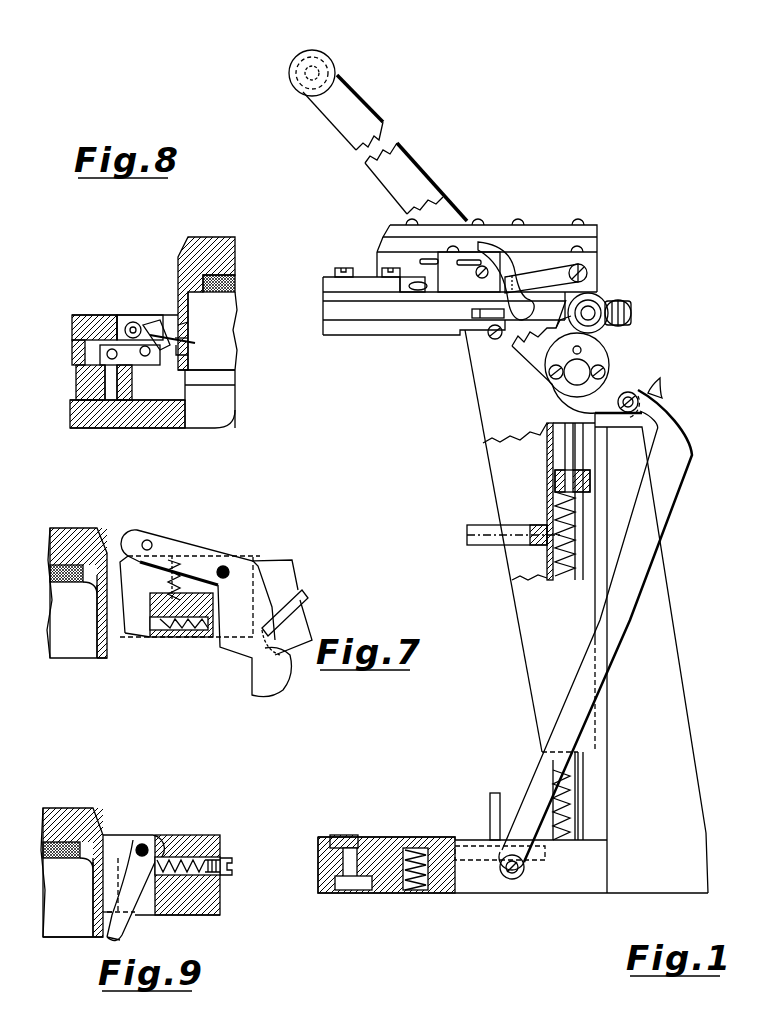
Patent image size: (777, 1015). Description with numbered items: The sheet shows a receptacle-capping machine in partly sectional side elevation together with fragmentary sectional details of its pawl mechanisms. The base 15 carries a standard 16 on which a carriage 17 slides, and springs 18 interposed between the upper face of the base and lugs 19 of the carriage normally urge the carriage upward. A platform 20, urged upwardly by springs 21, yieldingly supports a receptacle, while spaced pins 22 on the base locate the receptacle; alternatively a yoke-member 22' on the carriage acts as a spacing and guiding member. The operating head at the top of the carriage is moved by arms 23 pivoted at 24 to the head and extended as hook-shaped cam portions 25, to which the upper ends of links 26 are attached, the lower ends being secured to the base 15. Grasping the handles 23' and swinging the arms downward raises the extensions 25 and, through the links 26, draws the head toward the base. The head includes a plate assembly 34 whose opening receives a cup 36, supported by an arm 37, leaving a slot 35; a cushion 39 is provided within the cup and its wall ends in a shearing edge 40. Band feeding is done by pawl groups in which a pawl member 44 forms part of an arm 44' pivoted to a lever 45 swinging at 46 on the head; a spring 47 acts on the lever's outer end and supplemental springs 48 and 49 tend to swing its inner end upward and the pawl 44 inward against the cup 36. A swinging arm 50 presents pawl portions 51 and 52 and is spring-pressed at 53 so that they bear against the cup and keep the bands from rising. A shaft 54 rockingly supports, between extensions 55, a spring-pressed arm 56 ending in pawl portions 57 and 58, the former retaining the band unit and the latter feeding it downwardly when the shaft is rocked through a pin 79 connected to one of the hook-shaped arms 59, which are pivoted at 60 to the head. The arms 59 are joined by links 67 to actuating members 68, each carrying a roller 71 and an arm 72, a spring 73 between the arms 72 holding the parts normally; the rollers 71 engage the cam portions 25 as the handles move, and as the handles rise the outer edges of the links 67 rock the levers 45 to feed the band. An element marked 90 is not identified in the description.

In FIG. 1, the base 15 is at (513, 865).
In FIG. 1, the standard 16 is at (651, 660).
In FIG. 1, the carriage 17 is at (515, 541).
In FIG. 1, the springs 18 is at (546, 512).
In FIG. 1, the lugs 19 is at (591, 480).
In FIG. 1, the platform 20 is at (427, 837).
In FIG. 1, the springs 21 is at (420, 893).
In FIG. 1, the pins 22 is at (488, 801).
In FIG. 1, the yoke-member 22' is at (506, 524).
In FIG. 1, the arm 23 is at (449, 244).
In FIG. 1, the handle 23' is at (302, 66).
In FIG. 1, the pivot 24 is at (592, 370).
In FIG. 1, the hook-shaped cam portion 25 is at (661, 390).
In FIG. 1, the link 26 is at (630, 612).
In FIG. 1, the plate assembly 34 is at (323, 297).
In FIG. 8, the plate assembly 34 is at (72, 318).
In FIG. 7, the plate assembly 34 is at (285, 568).
In FIG. 9, the plate assembly 34 is at (197, 838).
In FIG. 8, the slot 35 is at (170, 322).
In FIG. 7, the slot 35 is at (97, 598).
In FIG. 9, the slot 35 is at (96, 880).
In FIG. 1, the cup 36 is at (377, 258).
In FIG. 8, the cup 36 is at (213, 240).
In FIG. 7, the cup 36 is at (70, 532).
In FIG. 9, the cup 36 is at (72, 812).
In FIG. 1, the arm 37 is at (536, 225).
In FIG. 8, the cushion 39 is at (236, 285).
In FIG. 7, the cushion 39 is at (66, 578).
In FIG. 9, the cushion 39 is at (68, 855).
In FIG. 8, the shearing edge 40 is at (190, 372).
In FIG. 7, the shearing edge 40 is at (107, 660).
In FIG. 9, the shearing edge 40 is at (80, 940).
In FIG. 7, the pawl member 44 is at (204, 626).
In FIG. 7, the arm 44' is at (191, 531).
In FIG. 1, the lever 45 is at (512, 268).
In FIG. 7, the lever 45 is at (210, 553).
In FIG. 1, the pivot 46 is at (466, 266).
In FIG. 7, the pivot 46 is at (226, 568).
In FIG. 1, the spring 47 is at (552, 270).
In FIG. 7, the spring 47 is at (303, 600).
In FIG. 7, the supplemental spring 48 is at (175, 560).
In FIG. 7, the supplemental spring 49 is at (195, 638).
In FIG. 9, the swinging arm 50 is at (128, 845).
In FIG. 9, the pawl portion 51 is at (106, 940).
In FIG. 9, the pawl portion 52 is at (95, 917).
In FIG. 9, the spring 53 is at (180, 880).
In FIG. 1, the shaft 54 is at (414, 293).
In FIG. 8, the shaft 54 is at (130, 320).
In FIG. 8, the extensions 55 is at (148, 323).
In FIG. 8, the spring-pressed arm 56 is at (189, 328).
In FIG. 8, the pawl portion 57 is at (190, 338).
In FIG. 8, the pawl portion 58 is at (190, 352).
In FIG. 1, the hook-shaped arm 59 is at (356, 322).
In FIG. 8, the hook-shaped arm 59 is at (76, 378).
In FIG. 1, the pivot 60 is at (340, 268).
In FIG. 1, the link 67 is at (472, 318).
In FIG. 1, the actuating member 68 is at (552, 337).
In FIG. 1, the roller 71 is at (600, 298).
In FIG. 1, the arm 72 is at (632, 315).
In FIG. 1, the spring 73 is at (623, 303).
In FIG. 8, the pin 79 is at (111, 398).
In FIG. 8, the block 90 is at (146, 360).